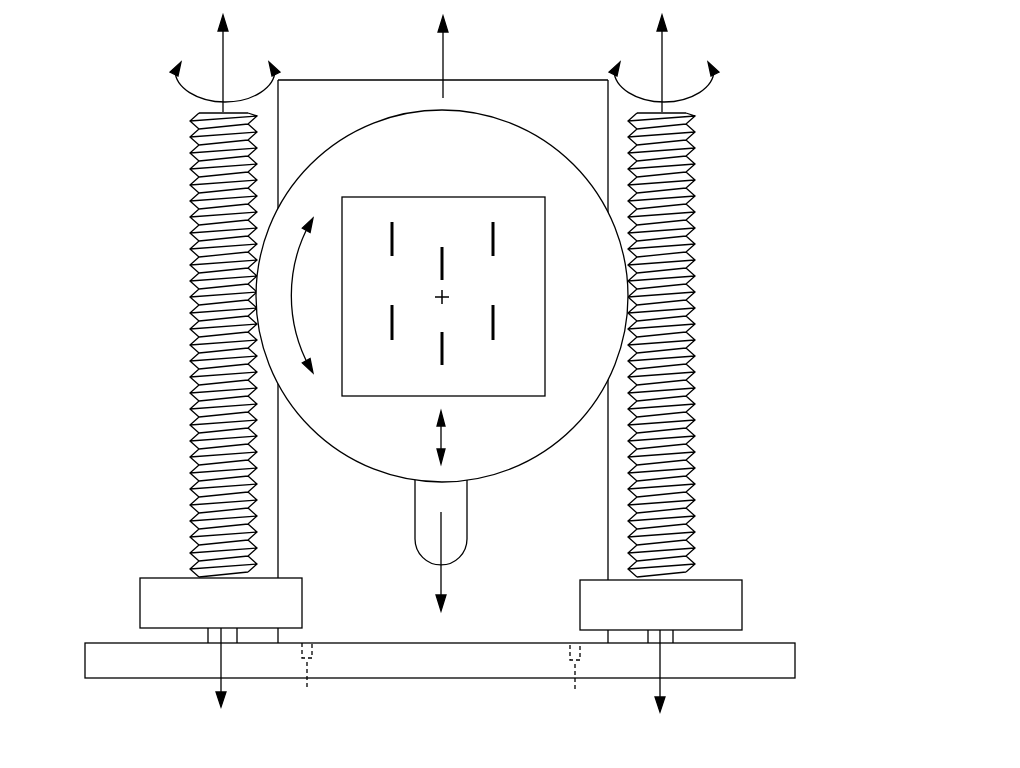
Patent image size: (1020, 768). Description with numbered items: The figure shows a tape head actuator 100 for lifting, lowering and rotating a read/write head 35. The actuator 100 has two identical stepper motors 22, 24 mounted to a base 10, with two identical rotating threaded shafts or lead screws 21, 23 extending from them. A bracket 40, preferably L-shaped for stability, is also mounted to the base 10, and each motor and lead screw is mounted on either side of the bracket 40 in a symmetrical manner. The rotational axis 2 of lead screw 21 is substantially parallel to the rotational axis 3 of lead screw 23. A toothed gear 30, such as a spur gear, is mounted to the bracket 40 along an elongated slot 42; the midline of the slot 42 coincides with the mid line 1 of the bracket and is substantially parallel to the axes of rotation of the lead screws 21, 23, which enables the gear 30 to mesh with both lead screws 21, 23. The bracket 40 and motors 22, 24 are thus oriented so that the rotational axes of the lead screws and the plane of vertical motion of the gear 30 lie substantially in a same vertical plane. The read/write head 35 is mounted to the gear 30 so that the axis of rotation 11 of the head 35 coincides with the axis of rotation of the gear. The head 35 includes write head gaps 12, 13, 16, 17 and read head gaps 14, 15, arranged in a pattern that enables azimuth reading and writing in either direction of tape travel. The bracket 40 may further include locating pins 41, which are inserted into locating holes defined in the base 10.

The tape head actuator 100 is at (108, 723).
The mid line of the bracket 1 is at (445, 56).
The rotational axis of lead screw 21 2 is at (225, 47).
The rotational axis of lead screw 23 3 is at (664, 48).
The base 10 is at (150, 666).
The axis of rotation of the head 11 is at (445, 296).
The write head gap 12 is at (393, 223).
The write head gap 13 is at (393, 307).
The read head gap 14 is at (443, 260).
The read head gap 15 is at (443, 345).
The write head gap 16 is at (494, 223).
The write head gap 17 is at (494, 307).
The lead screw 21 is at (189, 333).
The stepper motor 22 is at (139, 600).
The lead screw 23 is at (698, 335).
The stepper motor 24 is at (743, 606).
The toothed gear 30 is at (511, 468).
The read/write head 35 is at (378, 388).
The bracket 40 is at (553, 100).
The locating pins 41 is at (443, 680).
The elongated slot 42 is at (460, 546).